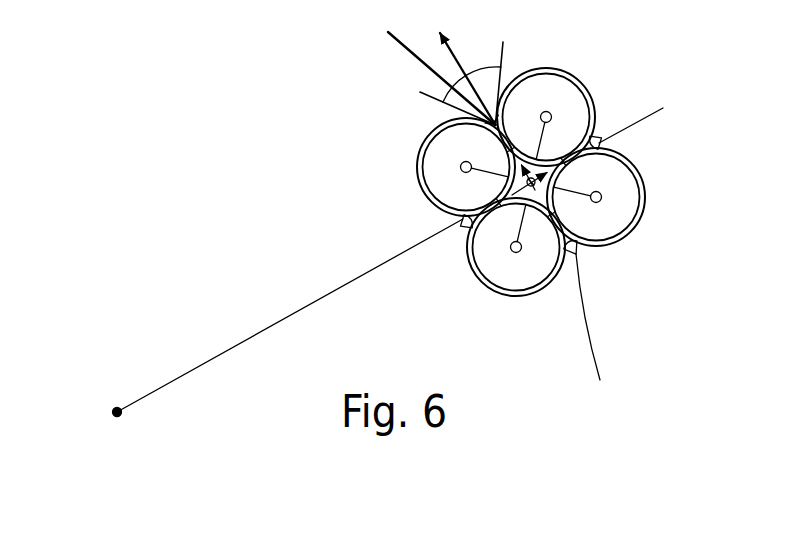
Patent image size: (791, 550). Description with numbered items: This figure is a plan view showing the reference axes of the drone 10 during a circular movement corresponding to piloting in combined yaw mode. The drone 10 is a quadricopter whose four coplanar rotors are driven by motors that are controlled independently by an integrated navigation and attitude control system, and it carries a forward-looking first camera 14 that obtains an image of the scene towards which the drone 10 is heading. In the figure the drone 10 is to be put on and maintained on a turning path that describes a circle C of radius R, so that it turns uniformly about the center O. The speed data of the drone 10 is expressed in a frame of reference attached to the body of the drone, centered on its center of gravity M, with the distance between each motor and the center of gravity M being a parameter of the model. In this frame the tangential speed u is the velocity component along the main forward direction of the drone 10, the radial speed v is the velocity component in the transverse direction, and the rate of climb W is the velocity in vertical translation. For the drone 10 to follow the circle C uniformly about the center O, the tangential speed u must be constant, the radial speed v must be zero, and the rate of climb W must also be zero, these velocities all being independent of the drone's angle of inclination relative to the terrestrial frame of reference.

The drone 10 is at (593, 97).
The first camera 14 is at (502, 50).
The center O is at (116, 410).
The radius R is at (390, 260).
The center of gravity M is at (550, 172).
The circle C is at (589, 317).
The tangential speed u is at (529, 164).
The radial speed v is at (536, 177).
The rate of climb W is at (528, 192).